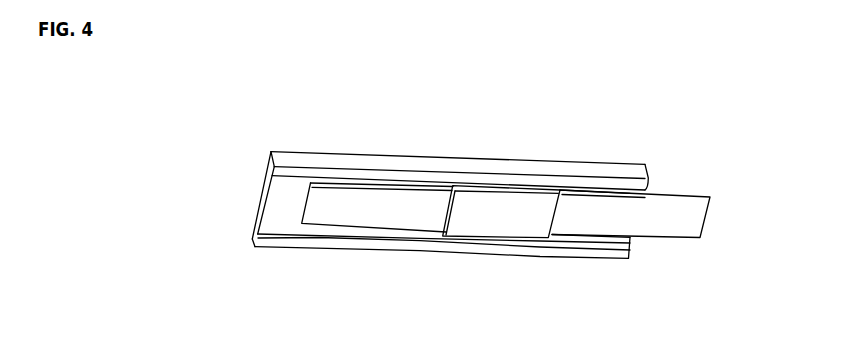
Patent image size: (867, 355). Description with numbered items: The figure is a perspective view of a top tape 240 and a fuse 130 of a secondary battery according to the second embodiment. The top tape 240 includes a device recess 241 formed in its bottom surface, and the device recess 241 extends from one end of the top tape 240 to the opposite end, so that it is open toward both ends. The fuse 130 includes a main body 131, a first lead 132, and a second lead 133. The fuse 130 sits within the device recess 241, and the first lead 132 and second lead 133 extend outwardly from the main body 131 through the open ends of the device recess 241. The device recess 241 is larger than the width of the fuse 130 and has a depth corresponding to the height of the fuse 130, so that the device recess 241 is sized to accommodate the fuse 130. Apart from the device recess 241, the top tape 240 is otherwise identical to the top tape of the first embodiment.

The fuse 130 is at (466, 154).
The main body 131 is at (504, 205).
The first lead 132 is at (417, 212).
The second lead 133 is at (591, 176).
The top tape 240 is at (654, 153).
The device recess 241 is at (276, 235).